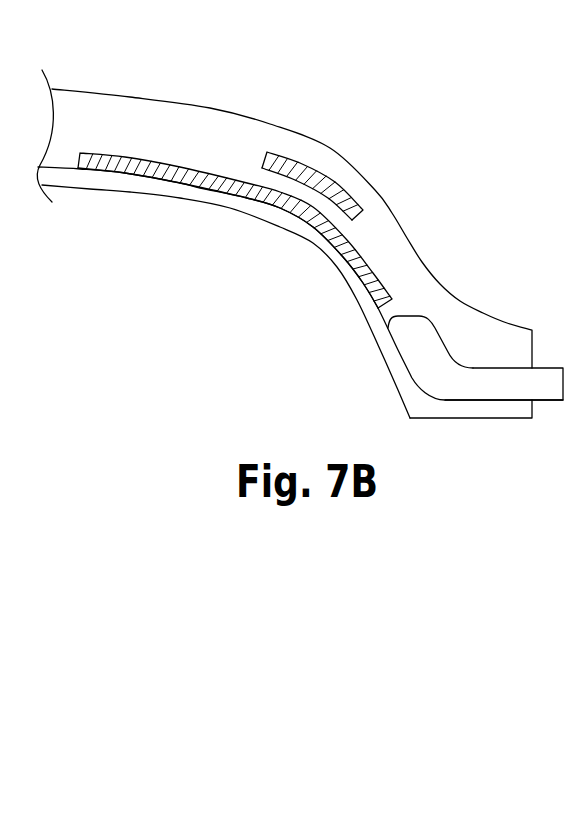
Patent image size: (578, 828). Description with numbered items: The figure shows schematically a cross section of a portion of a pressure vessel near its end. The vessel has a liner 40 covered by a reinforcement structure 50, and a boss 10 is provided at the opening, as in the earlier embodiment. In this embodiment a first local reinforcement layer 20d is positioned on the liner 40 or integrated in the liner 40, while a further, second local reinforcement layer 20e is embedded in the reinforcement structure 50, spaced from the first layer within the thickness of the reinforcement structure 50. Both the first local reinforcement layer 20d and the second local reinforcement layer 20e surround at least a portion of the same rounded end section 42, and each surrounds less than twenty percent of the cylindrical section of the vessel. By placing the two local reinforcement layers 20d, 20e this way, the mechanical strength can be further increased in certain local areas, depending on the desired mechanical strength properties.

The boss 10 is at (502, 377).
The first local reinforcement layer 20d is at (182, 167).
The second local reinforcement layer 20e is at (325, 178).
The liner 40 is at (182, 225).
The rounded end section 42 is at (347, 277).
The reinforcement structure 50 is at (150, 108).